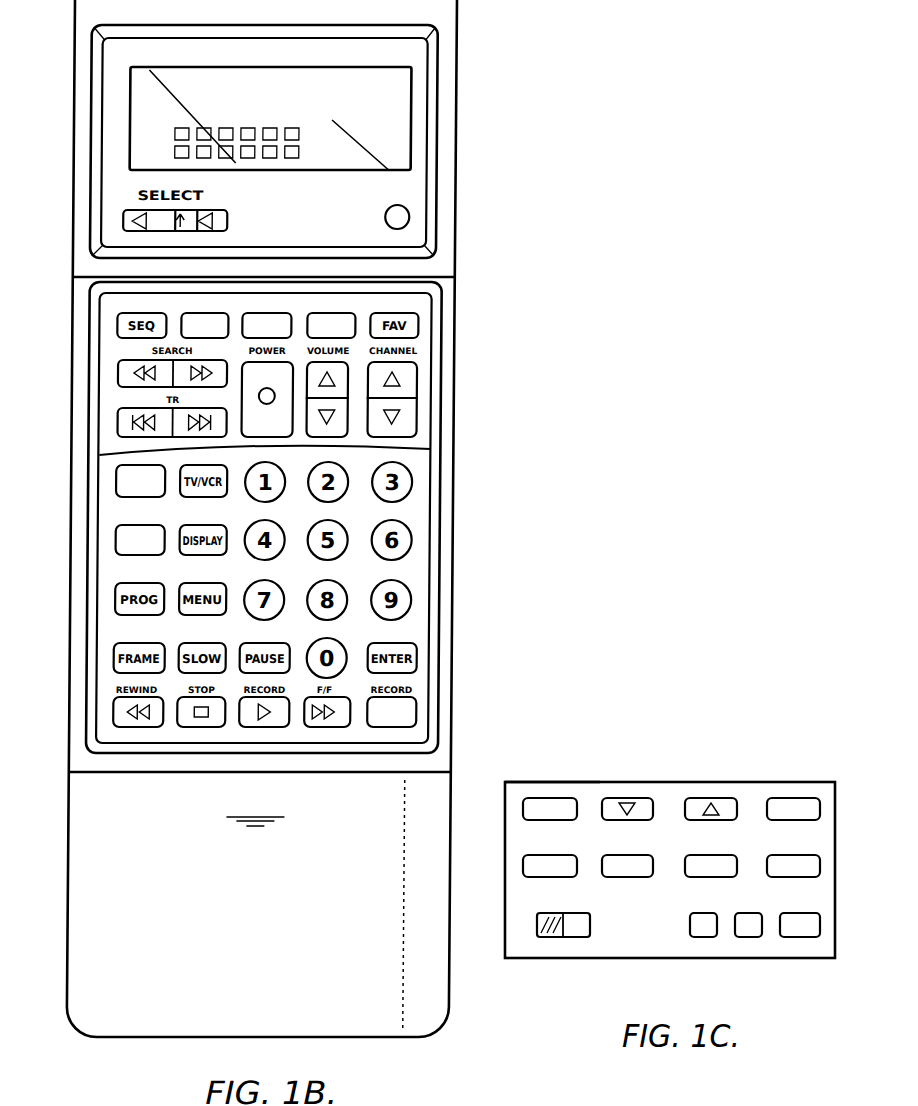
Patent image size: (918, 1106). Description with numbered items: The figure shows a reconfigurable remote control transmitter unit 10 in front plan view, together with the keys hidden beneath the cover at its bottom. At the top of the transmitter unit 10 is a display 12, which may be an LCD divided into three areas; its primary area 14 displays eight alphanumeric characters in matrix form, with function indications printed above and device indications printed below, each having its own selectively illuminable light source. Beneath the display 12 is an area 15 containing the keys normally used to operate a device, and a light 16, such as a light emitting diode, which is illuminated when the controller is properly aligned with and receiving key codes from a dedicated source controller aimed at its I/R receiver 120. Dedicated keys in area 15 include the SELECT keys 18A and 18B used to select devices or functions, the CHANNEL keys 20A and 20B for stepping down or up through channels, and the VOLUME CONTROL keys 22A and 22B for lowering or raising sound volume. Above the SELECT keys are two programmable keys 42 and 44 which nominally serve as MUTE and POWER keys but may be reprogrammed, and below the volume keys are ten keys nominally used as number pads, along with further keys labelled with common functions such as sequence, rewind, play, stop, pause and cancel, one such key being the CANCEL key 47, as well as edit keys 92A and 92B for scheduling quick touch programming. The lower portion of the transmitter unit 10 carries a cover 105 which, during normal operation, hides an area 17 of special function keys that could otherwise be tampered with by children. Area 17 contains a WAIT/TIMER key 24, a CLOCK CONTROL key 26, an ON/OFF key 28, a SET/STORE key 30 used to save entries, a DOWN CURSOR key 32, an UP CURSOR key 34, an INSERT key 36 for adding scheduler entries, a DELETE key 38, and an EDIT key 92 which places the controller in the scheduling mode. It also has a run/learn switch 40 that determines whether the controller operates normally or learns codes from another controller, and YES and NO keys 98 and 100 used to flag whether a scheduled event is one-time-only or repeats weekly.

In FIG. 1B, the transmitter unit 10 is at (551, 326).
In FIG. 1B, the display 12 is at (399, 114).
In FIG. 1B, the primary area 14 is at (178, 139).
In FIG. 1B, the normally accessible key area 15 is at (105, 306).
In FIG. 1B, the light 16 is at (409, 219).
In FIG. 1C, the special function key area 17 is at (512, 790).
In FIG. 1B, the SELECT key 18A is at (135, 217).
In FIG. 1B, the SELECT key 18B is at (165, 212).
In FIG. 1B, the CHANNEL key 20A is at (404, 420).
In FIG. 1B, the CHANNEL key 20B is at (404, 382).
In FIG. 1B, the VOLUME CONTROL key 22A is at (347, 372).
In FIG. 1B, the VOLUME CONTROL key 22B is at (346, 427).
In FIG. 1C, the WAIT/TIMER key 24 is at (540, 797).
In FIG. 1B, the CLOCK CONTROL key 26 is at (121, 537).
In FIG. 1C, the CLOCK CONTROL key 26 is at (822, 921).
In FIG. 1C, the ON/OFF key 28 is at (822, 862).
In FIG. 1C, the SET/STORE key 30 is at (523, 862).
In FIG. 1C, the DOWN CURSOR key 32 is at (640, 797).
In FIG. 1C, the UP CURSOR key 34 is at (717, 797).
In FIG. 1C, the INSERT key 36 is at (605, 855).
In FIG. 1C, the DELETE key 38 is at (738, 874).
In FIG. 1C, the run/learn switch 40 is at (553, 937).
In FIG. 1B, the MUTE key 42 is at (121, 483).
In FIG. 1B, the POWER key 44 is at (246, 441).
In FIG. 1B, the cancel key 47 is at (229, 314).
In FIG. 1C, the EDIT key 92 is at (808, 797).
In FIG. 1B, the QTA key 92A is at (280, 314).
In FIG. 1B, the QTB key 92B is at (356, 313).
In FIG. 1C, the YES key 98 is at (700, 937).
In FIG. 1C, the NO key 100 is at (748, 937).
In FIG. 1B, the cover 105 is at (102, 939).
In FIG. 1C, the cover 105 is at (820, 835).
In FIG. 1B, the I/R receiver 120 is at (332, 1041).